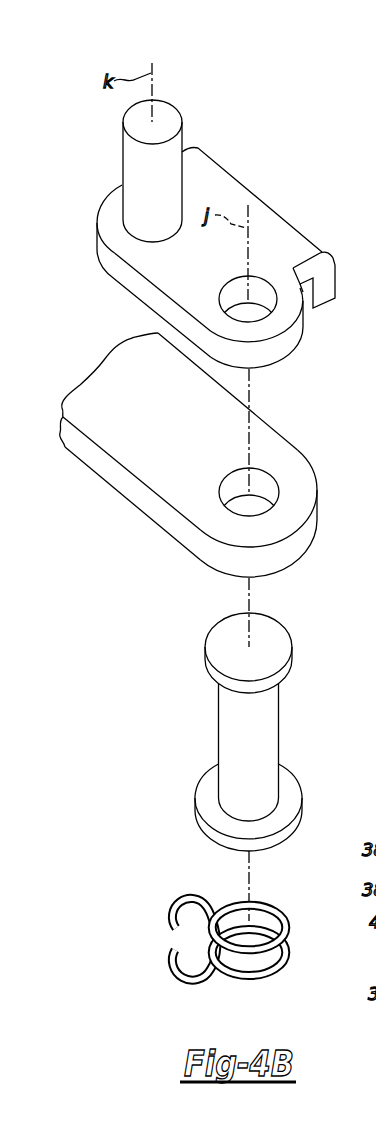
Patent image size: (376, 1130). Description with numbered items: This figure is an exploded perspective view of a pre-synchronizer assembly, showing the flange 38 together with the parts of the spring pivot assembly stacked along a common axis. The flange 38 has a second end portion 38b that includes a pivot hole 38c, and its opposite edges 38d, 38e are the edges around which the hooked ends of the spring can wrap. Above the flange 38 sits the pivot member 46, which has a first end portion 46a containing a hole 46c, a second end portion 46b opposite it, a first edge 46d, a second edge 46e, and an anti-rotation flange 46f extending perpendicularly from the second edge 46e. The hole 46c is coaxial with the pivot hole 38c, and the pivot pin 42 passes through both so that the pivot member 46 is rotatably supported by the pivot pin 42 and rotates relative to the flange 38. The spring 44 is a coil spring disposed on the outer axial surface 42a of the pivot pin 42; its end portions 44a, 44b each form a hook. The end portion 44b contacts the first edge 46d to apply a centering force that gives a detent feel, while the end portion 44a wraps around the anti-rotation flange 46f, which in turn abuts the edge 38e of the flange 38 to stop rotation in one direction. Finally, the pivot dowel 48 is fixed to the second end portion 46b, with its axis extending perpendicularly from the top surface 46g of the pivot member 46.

The pivot dowel 48 is at (170, 118).
The pivot member 46 is at (208, 240).
The second edge 46e is at (250, 181).
The second end portion 46b is at (97, 228).
The first edge 46d is at (104, 250).
The top surface 46g is at (147, 259).
The first end portion 46a is at (297, 328).
The hole 46c is at (266, 292).
The anti-rotation flange 46f is at (330, 277).
The flange 38 is at (213, 458).
The edge 38e is at (253, 422).
The second end portion 38b is at (300, 537).
The edge 38d is at (149, 504).
The pivot hole 38c is at (268, 490).
The pivot pin 42 is at (275, 732).
The outer axial surface 42a is at (268, 725).
The spring 44 is at (222, 939).
The second end portion 44a is at (165, 903).
The first end portion 44b is at (168, 963).